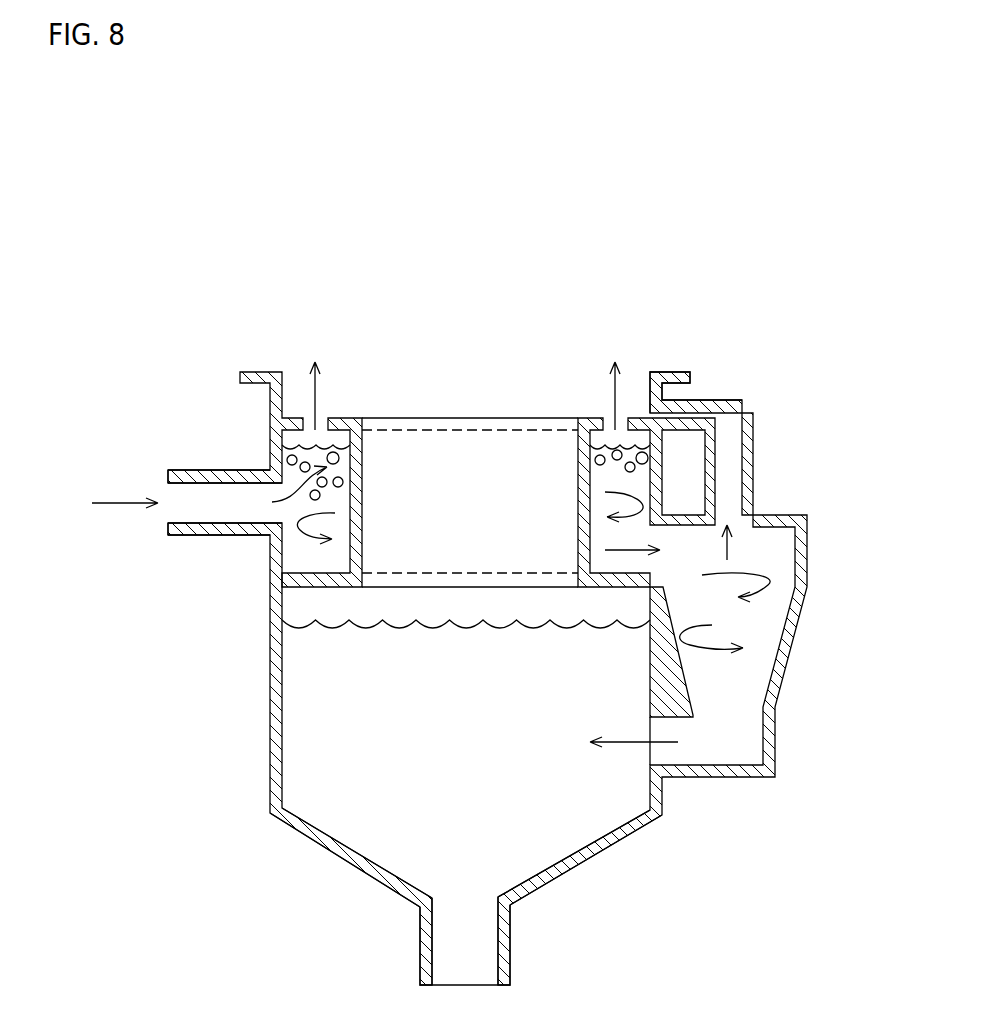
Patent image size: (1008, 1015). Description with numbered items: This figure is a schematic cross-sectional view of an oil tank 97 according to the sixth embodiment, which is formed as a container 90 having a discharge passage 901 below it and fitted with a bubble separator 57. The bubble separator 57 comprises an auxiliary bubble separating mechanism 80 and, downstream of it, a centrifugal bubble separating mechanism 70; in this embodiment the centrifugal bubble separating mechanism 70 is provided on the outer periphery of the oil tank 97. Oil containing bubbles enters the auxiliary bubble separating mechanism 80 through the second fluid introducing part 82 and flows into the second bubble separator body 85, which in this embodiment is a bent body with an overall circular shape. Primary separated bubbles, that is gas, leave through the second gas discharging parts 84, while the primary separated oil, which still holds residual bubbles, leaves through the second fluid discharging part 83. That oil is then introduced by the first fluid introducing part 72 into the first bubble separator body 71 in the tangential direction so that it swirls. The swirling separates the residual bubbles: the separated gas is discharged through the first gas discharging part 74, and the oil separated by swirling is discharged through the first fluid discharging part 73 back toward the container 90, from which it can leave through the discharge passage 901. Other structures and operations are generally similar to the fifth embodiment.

The bubble separator 57 is at (778, 220).
The auxiliary bubble separating mechanism 80 is at (485, 358).
The centrifugal bubble separating mechanism 70 is at (789, 383).
The second gas discharging parts 84 is at (306, 427).
The first gas discharging part 74 is at (647, 413).
The second fluid introducing part 82 is at (203, 500).
The second fluid discharging part 83 is at (657, 540).
The first fluid introducing part 72 is at (671, 471).
The first bubble separator body 71 is at (807, 557).
The second bubble separator body 85 is at (270, 557).
The oil tank 97 is at (242, 758).
The first fluid discharging part 73 is at (692, 748).
The container 90 is at (583, 863).
The discharge passage 901 is at (510, 947).